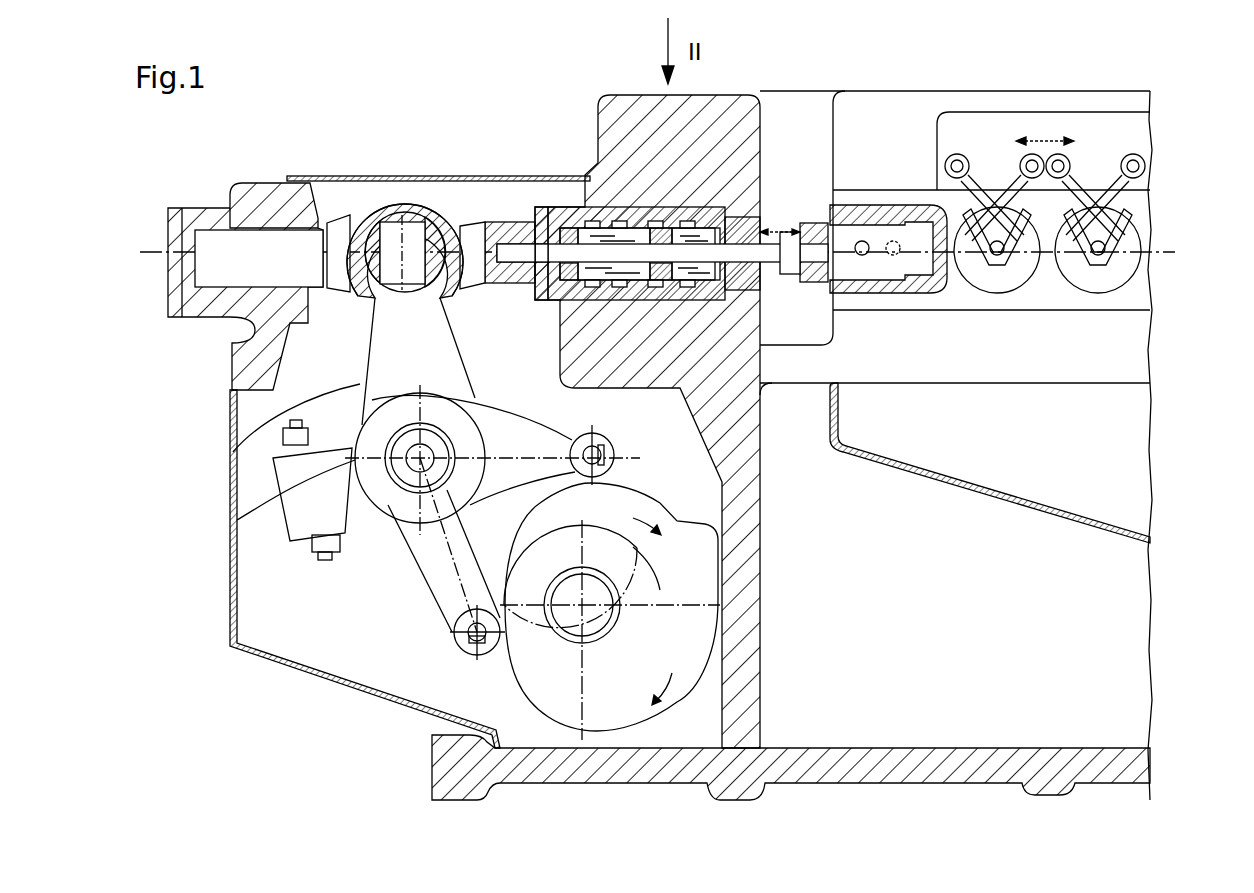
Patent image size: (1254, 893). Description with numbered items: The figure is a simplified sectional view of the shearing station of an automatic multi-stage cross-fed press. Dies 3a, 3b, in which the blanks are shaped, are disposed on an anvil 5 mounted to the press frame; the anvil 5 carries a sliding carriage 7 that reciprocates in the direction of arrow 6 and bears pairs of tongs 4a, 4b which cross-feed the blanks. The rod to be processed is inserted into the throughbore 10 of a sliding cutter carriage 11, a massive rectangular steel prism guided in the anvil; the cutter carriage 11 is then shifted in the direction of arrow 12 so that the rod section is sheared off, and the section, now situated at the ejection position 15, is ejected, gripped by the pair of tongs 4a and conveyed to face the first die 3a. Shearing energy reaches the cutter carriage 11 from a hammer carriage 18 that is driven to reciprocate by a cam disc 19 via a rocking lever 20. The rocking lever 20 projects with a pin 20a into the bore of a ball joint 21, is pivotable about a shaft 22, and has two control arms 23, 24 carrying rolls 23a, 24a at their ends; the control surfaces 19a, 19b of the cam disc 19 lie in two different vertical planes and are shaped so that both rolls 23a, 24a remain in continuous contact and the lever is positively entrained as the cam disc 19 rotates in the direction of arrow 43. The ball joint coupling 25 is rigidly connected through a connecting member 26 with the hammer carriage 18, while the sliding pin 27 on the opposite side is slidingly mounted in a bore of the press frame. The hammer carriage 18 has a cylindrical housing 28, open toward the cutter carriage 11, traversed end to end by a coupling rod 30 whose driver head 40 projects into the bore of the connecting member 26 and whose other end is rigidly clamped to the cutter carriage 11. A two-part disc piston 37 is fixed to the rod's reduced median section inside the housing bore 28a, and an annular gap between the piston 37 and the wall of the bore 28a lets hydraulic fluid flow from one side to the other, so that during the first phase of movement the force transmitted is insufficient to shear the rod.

The die 3a is at (1010, 273).
The die 3b is at (1123, 262).
The pair of tongs 4a is at (987, 175).
The pair of tongs 4b is at (1090, 180).
The anvil 5 is at (1147, 204).
The arrow 6 is at (1040, 140).
The sliding carriage 7 is at (1140, 137).
The throughbore 10 is at (863, 258).
The cutter carriage 11 is at (812, 223).
The arrow 12 is at (870, 227).
The ejection position 15 is at (893, 256).
The hammer carriage 18 is at (627, 203).
The cam disc 19 is at (540, 692).
The control surface 19a is at (653, 493).
The control surface 19b is at (680, 560).
The rocking lever 20 is at (240, 447).
The pin 20a is at (412, 242).
The ball joint 21 is at (380, 215).
The shaft 22 is at (237, 520).
The control arm 23 is at (513, 433).
The roll 23a is at (613, 450).
The control arm 24 is at (430, 557).
The roll 24a is at (448, 645).
The ball joint coupling 25 is at (338, 214).
The connecting member 26 is at (497, 237).
The sliding pin 27 is at (225, 243).
The cylindrical housing 28 is at (682, 217).
The housing bore 28a is at (597, 227).
The coupling rod 30 is at (560, 308).
The disc piston 37 is at (760, 392).
The driver head 40 is at (520, 285).
The arrow 43 is at (672, 673).